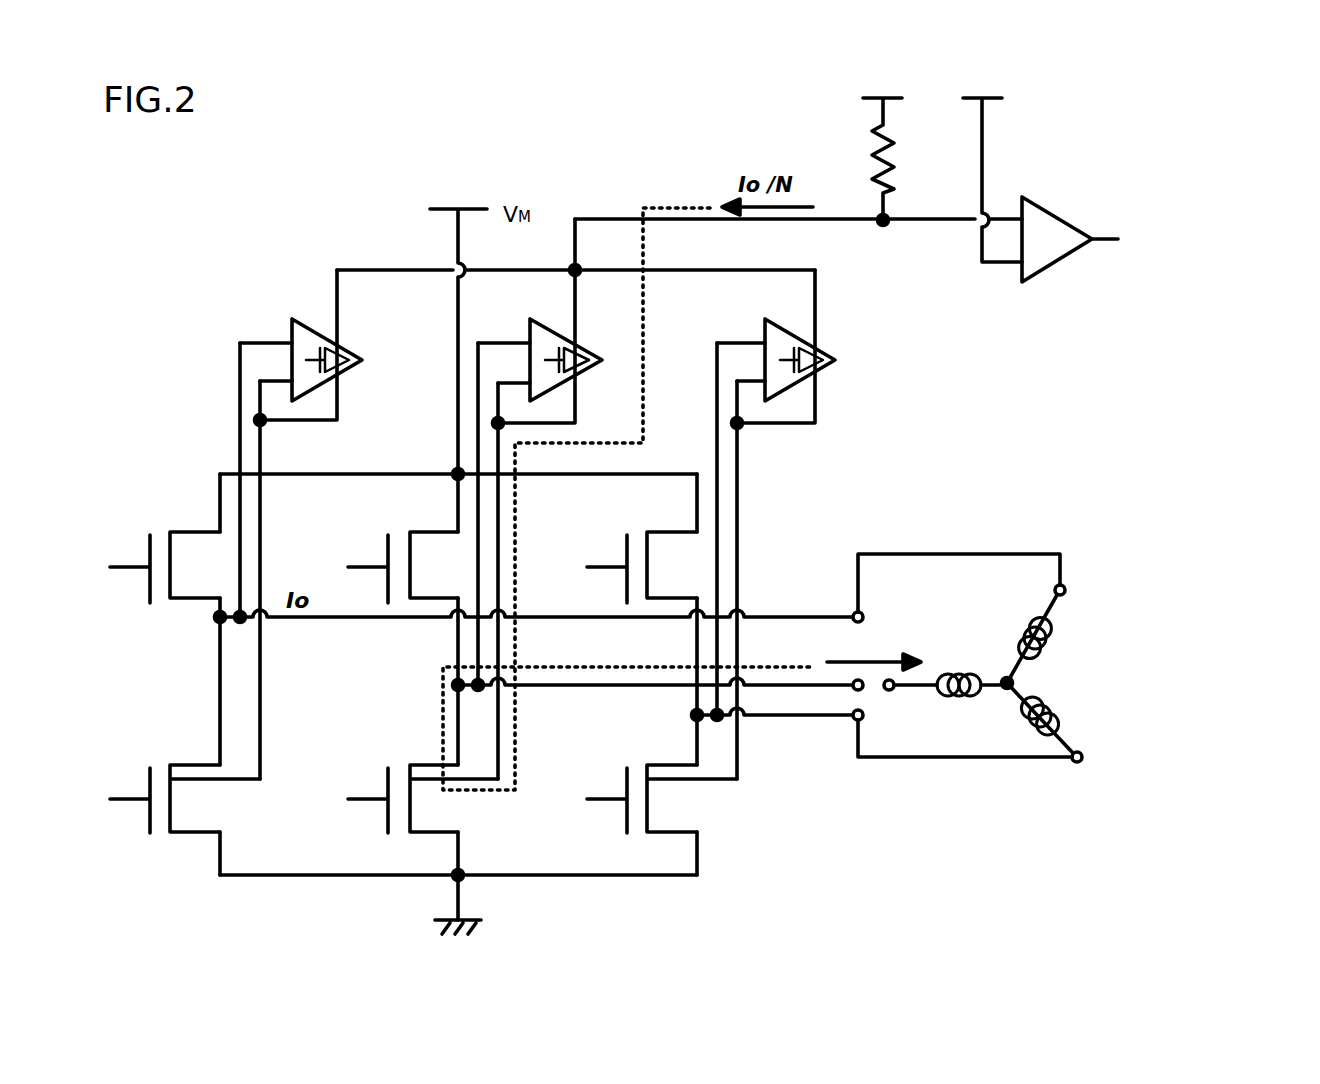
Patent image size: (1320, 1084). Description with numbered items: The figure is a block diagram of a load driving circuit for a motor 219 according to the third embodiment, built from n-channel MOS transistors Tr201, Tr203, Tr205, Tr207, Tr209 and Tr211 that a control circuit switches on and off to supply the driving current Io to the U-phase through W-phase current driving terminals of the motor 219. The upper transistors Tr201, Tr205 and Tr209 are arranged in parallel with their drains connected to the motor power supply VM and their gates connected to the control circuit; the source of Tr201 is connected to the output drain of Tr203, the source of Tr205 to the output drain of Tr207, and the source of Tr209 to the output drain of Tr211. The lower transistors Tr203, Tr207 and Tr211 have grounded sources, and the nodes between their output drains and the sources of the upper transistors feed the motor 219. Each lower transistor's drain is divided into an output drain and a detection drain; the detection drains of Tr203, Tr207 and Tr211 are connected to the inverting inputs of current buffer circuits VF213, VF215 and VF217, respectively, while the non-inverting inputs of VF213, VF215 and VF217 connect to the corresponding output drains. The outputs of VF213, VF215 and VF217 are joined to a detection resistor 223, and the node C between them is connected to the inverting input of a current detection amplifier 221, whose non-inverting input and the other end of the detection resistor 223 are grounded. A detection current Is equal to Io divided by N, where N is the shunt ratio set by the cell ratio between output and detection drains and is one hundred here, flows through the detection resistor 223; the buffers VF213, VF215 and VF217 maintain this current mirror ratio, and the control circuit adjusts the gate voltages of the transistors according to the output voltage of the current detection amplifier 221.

The transistor Tr201 is at (165, 549).
The transistor Tr203 is at (185, 781).
The transistor Tr205 is at (403, 551).
The transistor Tr207 is at (423, 783).
The transistor Tr209 is at (642, 551).
The transistor Tr211 is at (662, 783).
The current buffer circuit VF213 is at (301, 347).
The current buffer circuit VF215 is at (540, 347).
The current buffer circuit VF217 is at (776, 347).
The motor 219 is at (1005, 635).
The current detection amplifier 221 is at (1080, 224).
The detection resistor 223 is at (906, 167).